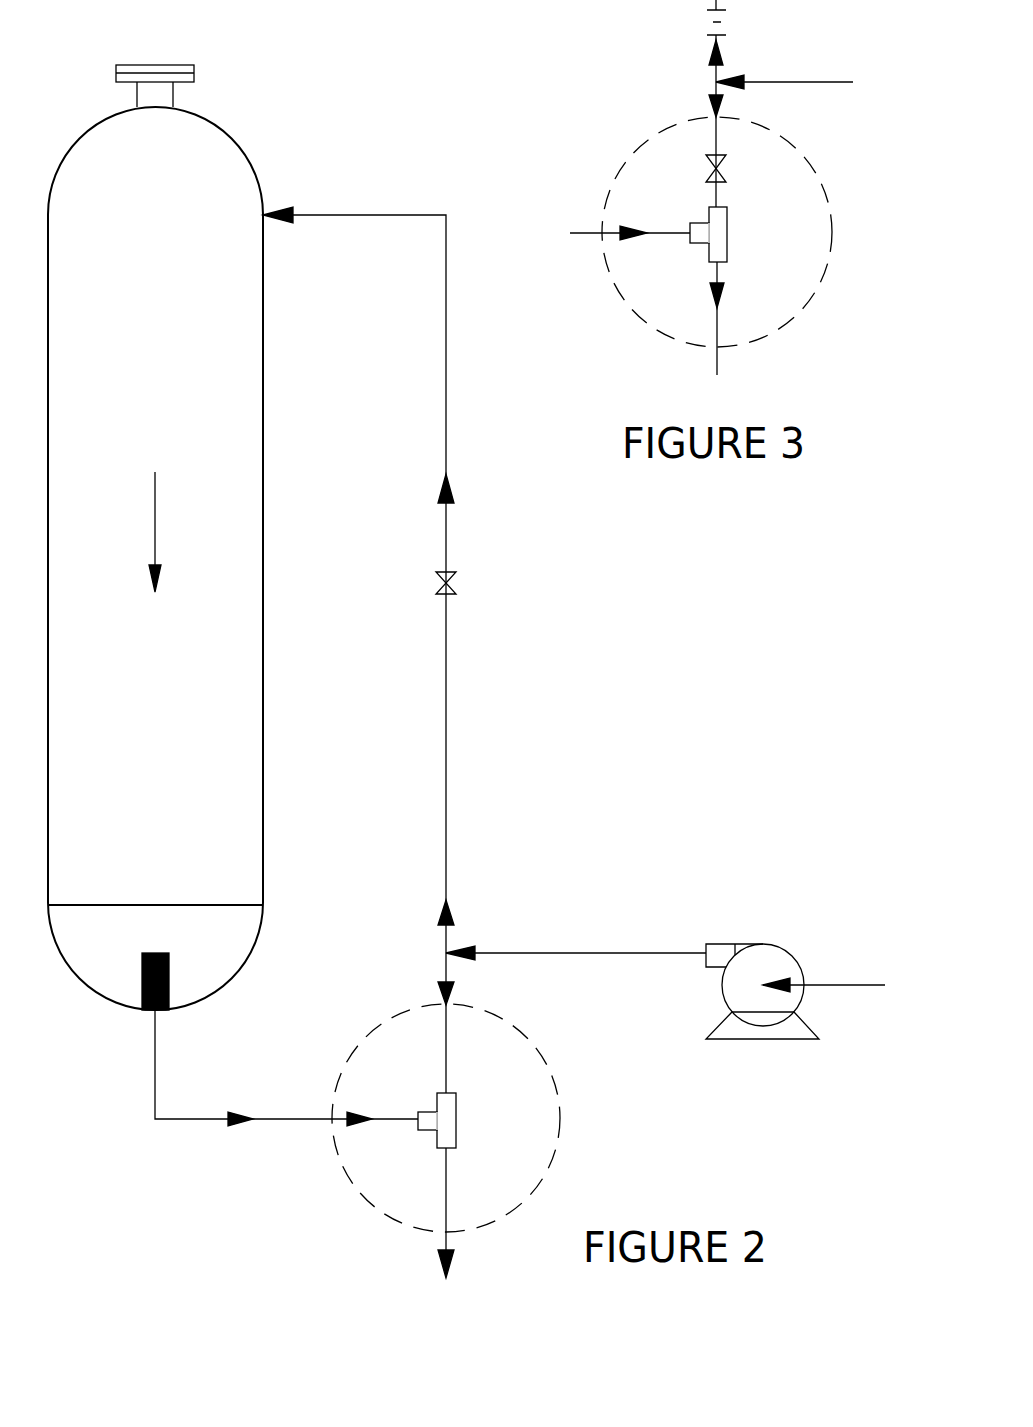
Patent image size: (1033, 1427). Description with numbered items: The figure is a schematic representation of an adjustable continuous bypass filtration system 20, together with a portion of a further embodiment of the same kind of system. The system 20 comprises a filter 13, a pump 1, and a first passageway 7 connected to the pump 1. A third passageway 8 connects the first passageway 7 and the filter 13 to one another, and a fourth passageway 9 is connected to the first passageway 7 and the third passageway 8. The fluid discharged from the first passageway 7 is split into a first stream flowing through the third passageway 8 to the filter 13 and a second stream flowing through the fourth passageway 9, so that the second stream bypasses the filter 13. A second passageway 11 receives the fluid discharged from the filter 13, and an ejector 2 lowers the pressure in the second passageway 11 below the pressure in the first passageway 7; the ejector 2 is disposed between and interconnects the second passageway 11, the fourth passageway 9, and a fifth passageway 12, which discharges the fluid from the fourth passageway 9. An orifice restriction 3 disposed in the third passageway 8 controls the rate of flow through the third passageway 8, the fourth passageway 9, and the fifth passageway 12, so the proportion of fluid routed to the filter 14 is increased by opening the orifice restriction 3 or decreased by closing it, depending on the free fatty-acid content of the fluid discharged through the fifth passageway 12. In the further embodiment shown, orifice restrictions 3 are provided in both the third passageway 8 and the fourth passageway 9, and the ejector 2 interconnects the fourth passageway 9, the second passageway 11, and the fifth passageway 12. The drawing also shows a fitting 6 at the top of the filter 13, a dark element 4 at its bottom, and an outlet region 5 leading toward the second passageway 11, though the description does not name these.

In FIG. 2, the pump 1 is at (737, 943).
In FIG. 2, the ejector 2 is at (457, 1120).
In FIG. 3, the ejector 2 is at (727, 237).
In FIG. 2, the orifice restriction 3 is at (441, 583).
In FIG. 3, the orifice restriction 3 is at (707, 168).
In FIG. 2, the outlet screen 4 is at (170, 995).
In FIG. 2, the vessel outlet line 5 is at (240, 972).
In FIG. 2, the vessel fill port 6 is at (155, 64).
In FIG. 2, the first passageway 7 is at (635, 953).
In FIG. 3, the first passageway 7 is at (825, 82).
In FIG. 2, the third passageway 8 is at (444, 537).
In FIG. 3, the third passageway 8 is at (718, 79).
In FIG. 2, the fourth passageway 9 is at (446, 1063).
In FIG. 3, the fourth passageway 9 is at (716, 137).
In FIG. 2, the second passageway 11 is at (403, 1122).
In FIG. 3, the second passageway 11 is at (677, 235).
In FIG. 2, the fifth passageway 12 is at (446, 1180).
In FIG. 3, the fifth passageway 12 is at (717, 308).
In FIG. 2, the filter 13 is at (263, 283).
In FIG. 2, the filter 14 is at (241, 360).
In FIG. 2, the adjustable continuous bypass filtration system 20 is at (345, 124).